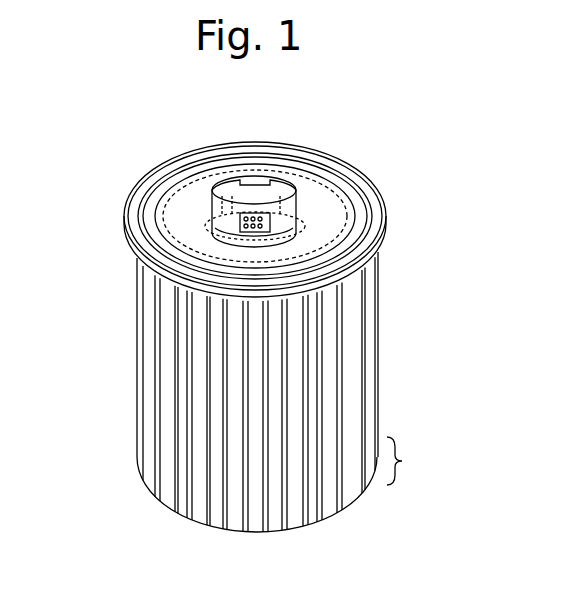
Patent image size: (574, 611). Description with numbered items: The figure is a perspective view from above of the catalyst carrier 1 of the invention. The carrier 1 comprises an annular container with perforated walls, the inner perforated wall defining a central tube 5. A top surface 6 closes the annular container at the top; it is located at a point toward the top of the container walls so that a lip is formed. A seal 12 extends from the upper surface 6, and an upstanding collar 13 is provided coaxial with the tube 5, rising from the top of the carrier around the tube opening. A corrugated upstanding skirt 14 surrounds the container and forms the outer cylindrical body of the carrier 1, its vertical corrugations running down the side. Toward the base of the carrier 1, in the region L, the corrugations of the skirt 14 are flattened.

The catalyst carrier 1 is at (108, 305).
The tube 5 is at (272, 202).
The top surface 6 is at (182, 210).
The seal 12 is at (375, 211).
The upstanding collar 13 is at (221, 188).
The corrugated upstanding skirt 14 is at (355, 355).
The region L is at (405, 461).